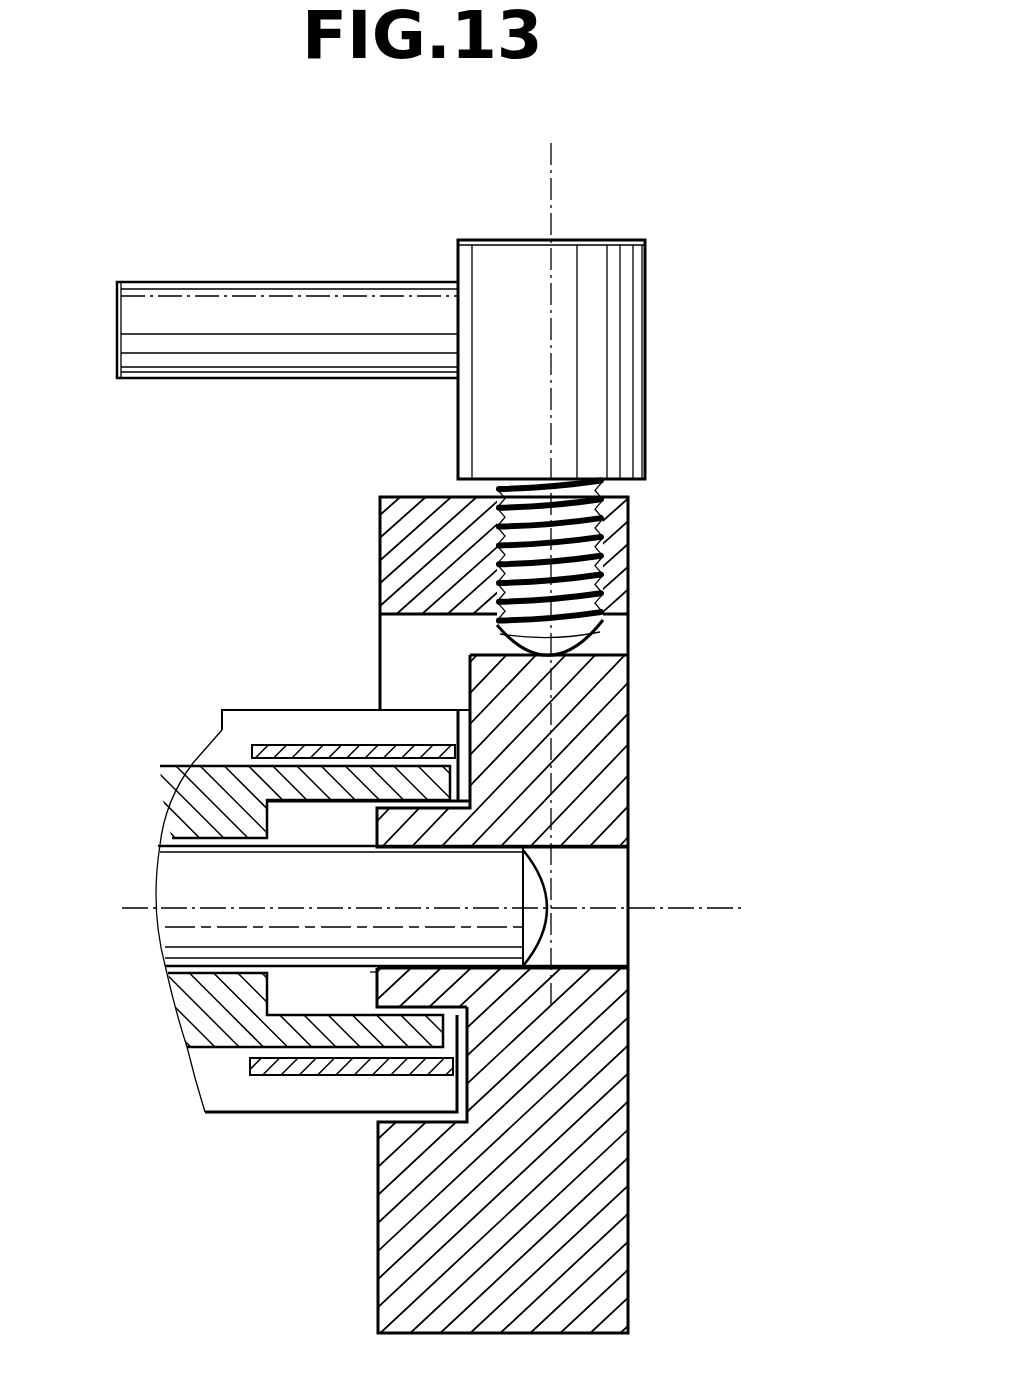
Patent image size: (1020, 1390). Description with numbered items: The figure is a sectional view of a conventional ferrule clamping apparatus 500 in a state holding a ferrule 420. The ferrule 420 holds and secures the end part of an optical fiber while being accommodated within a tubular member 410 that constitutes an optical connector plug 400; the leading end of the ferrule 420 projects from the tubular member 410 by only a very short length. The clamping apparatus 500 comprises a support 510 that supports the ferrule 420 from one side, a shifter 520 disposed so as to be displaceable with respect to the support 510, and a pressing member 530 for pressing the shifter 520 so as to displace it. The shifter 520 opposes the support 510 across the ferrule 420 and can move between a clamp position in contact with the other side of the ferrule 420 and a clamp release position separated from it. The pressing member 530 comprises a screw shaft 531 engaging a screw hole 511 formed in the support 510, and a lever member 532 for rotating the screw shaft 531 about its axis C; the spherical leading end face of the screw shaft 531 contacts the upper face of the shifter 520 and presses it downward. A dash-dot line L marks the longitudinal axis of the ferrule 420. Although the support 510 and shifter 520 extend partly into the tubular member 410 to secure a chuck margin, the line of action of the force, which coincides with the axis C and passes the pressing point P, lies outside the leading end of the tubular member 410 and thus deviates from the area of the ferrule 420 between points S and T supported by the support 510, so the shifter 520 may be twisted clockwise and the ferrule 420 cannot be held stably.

The optical connector plug 400 is at (188, 688).
The tubular member 410 is at (270, 718).
The ferrule 420 is at (185, 945).
The clamping apparatus 500 is at (752, 632).
The support 510 is at (636, 1255).
The screw hole 511 is at (603, 530).
The shifter 520 is at (640, 790).
The pressing member 530 is at (660, 321).
The screw shaft 531 is at (497, 557).
The lever member 532 is at (292, 307).
The axis C is at (555, 180).
The shaft axis L is at (688, 912).
The pressing point P is at (553, 657).
The point S is at (527, 975).
The point T is at (373, 972).